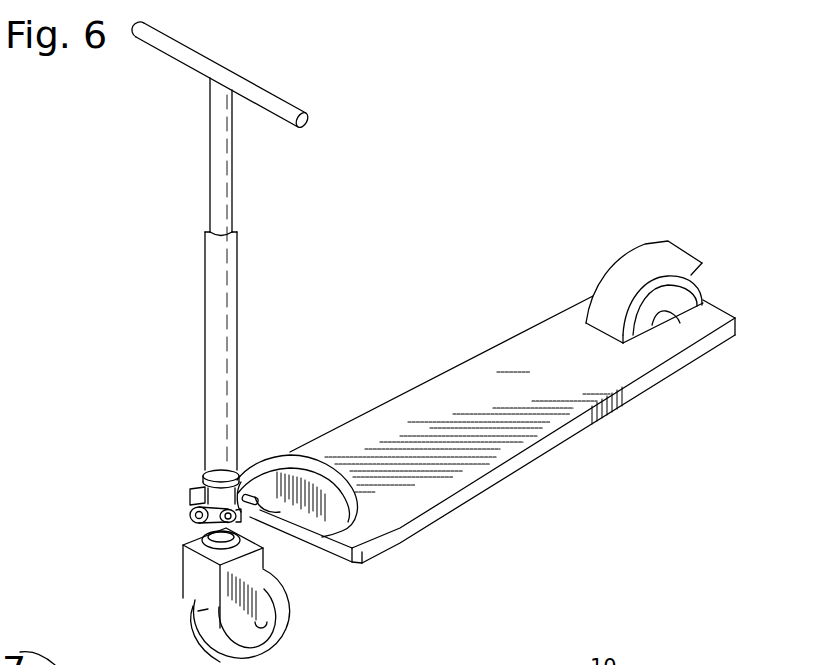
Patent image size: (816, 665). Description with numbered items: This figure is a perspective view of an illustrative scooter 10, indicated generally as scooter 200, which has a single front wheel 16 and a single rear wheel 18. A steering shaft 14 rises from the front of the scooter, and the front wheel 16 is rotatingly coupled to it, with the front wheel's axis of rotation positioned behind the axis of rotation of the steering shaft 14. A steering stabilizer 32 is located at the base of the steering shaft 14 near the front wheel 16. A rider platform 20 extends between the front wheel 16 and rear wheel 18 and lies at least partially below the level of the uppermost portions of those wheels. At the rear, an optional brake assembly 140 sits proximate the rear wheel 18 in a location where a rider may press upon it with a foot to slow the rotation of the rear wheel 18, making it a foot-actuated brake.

The scooter 10 is at (608, 81).
The scooter 200 is at (560, 136).
The steering shaft 14 is at (240, 306).
The steering stabilizer 32 is at (193, 517).
The front wheel 16 is at (292, 596).
The rider platform 20 is at (530, 373).
The brake assembly 140 is at (637, 263).
The rear wheel 18 is at (698, 290).